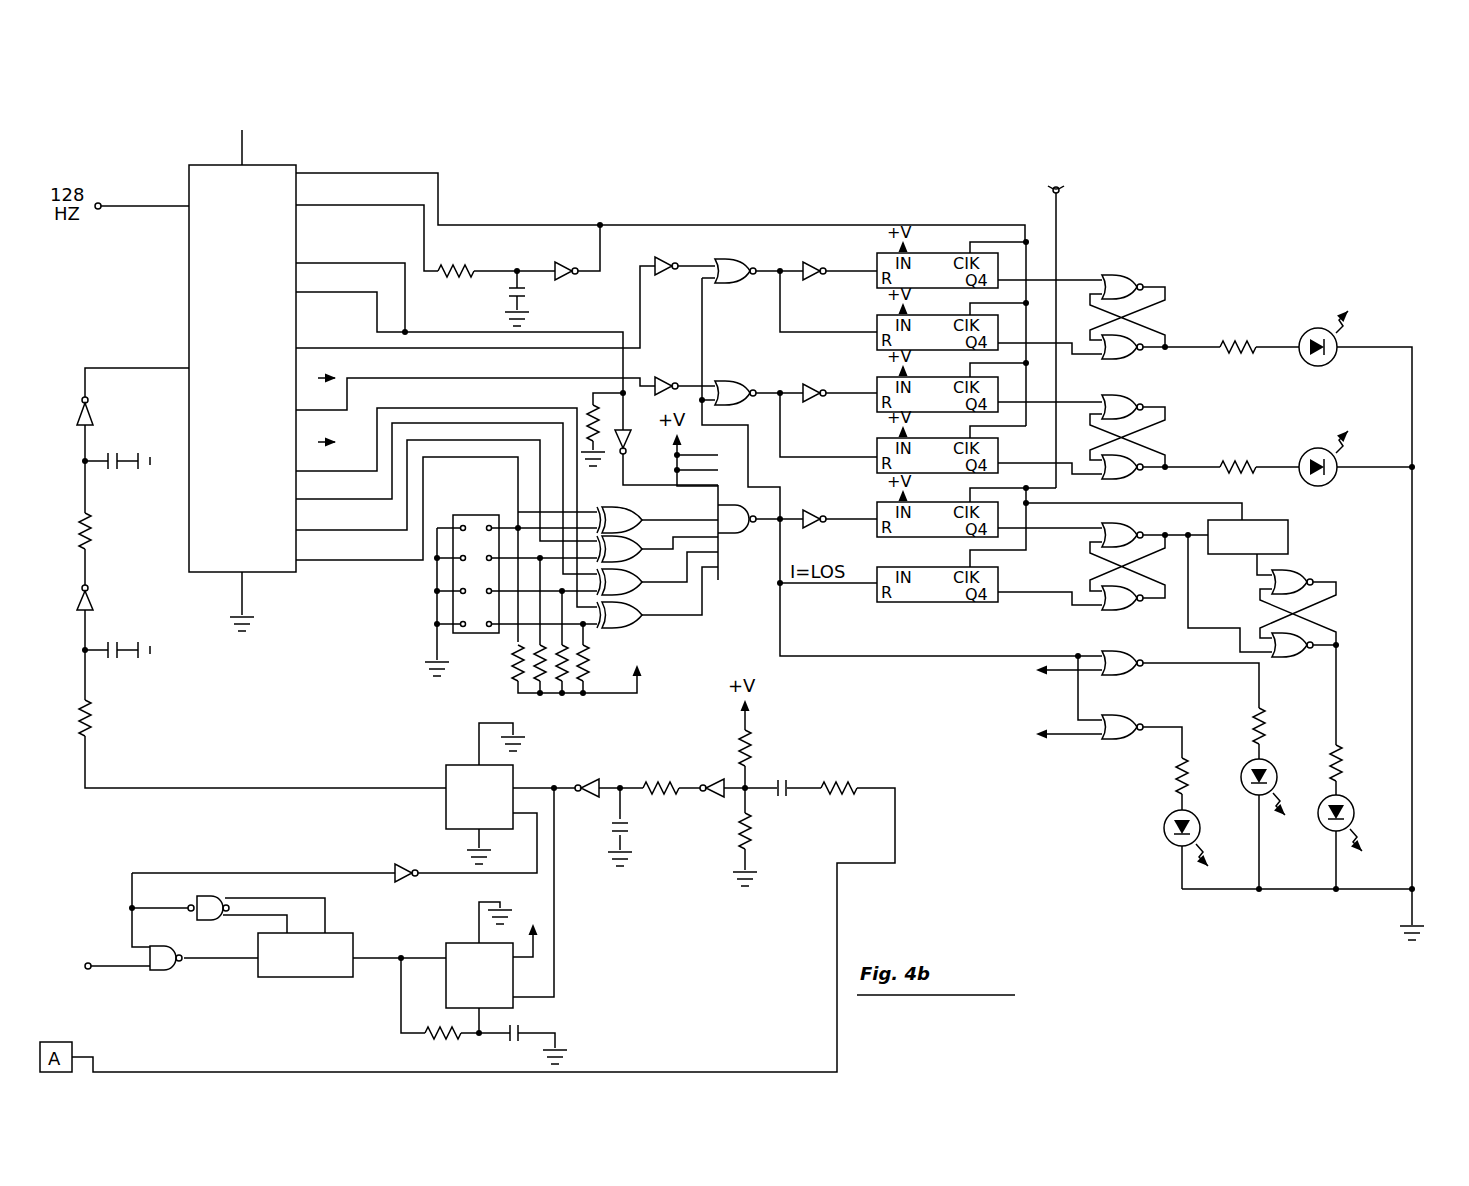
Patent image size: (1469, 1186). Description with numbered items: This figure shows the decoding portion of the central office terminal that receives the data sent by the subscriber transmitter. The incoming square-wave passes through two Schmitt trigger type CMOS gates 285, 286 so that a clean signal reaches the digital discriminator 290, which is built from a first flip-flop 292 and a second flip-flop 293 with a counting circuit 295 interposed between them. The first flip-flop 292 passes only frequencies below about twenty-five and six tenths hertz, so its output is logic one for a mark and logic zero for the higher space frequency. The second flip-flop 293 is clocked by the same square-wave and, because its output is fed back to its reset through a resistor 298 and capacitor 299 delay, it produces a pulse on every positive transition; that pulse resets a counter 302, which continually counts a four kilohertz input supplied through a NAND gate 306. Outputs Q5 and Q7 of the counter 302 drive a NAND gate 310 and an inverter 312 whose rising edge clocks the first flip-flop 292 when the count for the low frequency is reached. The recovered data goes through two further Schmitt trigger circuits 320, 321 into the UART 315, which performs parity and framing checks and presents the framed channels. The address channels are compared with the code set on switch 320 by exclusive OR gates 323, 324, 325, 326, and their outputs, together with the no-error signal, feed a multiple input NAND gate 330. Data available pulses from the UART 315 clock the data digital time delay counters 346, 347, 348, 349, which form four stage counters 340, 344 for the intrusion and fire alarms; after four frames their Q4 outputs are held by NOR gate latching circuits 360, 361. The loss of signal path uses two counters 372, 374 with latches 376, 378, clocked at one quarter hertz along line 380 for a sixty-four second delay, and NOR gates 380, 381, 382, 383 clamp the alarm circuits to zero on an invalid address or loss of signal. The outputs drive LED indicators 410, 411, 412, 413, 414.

The Schmitt trigger type CMOS gate 285 is at (712, 810).
The Schmitt trigger type CMOS gate 286 is at (592, 820).
The digital discriminator 290 is at (158, 856).
The first flip-flop 292 is at (513, 780).
The second flip-flop 293 is at (513, 1006).
The counting circuit 295 is at (275, 988).
The resistor 298 is at (432, 1042).
The capacitor 299 is at (522, 1044).
The counter 302 is at (353, 940).
The NAND gate 306 is at (172, 970).
The NAND gate 310 is at (218, 896).
The inverter 312 is at (408, 864).
The UART 315 is at (189, 275).
The Schmitt trigger circuit / switch 320 is at (112, 582).
The Schmitt trigger circuit 321 is at (113, 413).
The exclusive OR gate 323 is at (655, 603).
The exclusive OR gate 324 is at (646, 580).
The exclusive OR gate 325 is at (650, 553).
The exclusive OR gate 326 is at (616, 512).
The multiple input NAND gate 330 is at (752, 525).
The four stage counter 340 is at (1078, 262).
The four stage counter 344 is at (1078, 392).
The data digital time delay counter 346 is at (877, 282).
The data digital time delay counter 347 is at (877, 343).
The data digital time delay counter 348 is at (877, 404).
The data digital time delay counter 349 is at (877, 466).
The NOR gate latching circuit 360 is at (1175, 318).
The NOR gate latching circuit 361 is at (1175, 442).
The counter 372 is at (870, 605).
The counter 374 is at (1275, 520).
The latch 376 is at (1050, 608).
The latch 378 is at (1322, 572).
The NOR gate / 0.25 hertz clock line 380 is at (738, 259).
The NOR gate 381 is at (738, 381).
The NOR gate 382 is at (1122, 652).
The NOR gate 383 is at (1122, 716).
The LED indicator 410 is at (1306, 330).
The LED indicator 411 is at (1302, 462).
The LED indicator 412 is at (1298, 766).
The LED indicator 413 is at (1200, 832).
The LED indicator 414 is at (1350, 805).